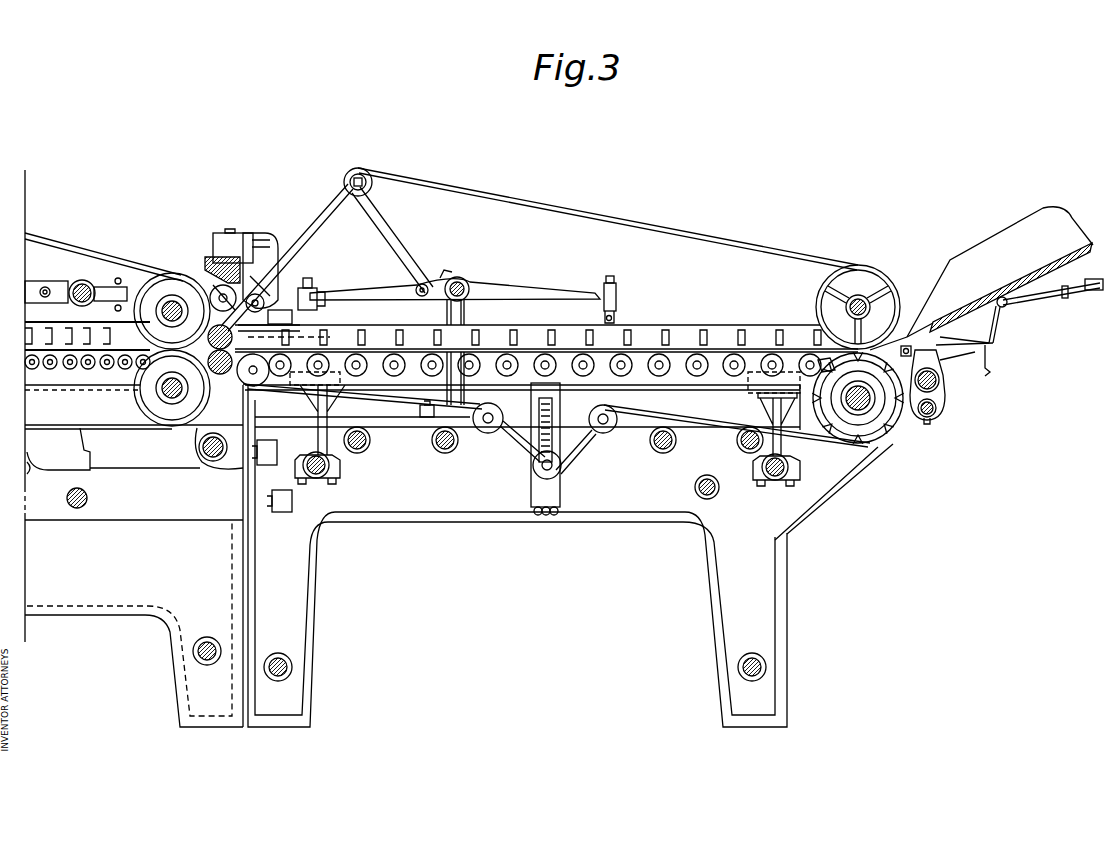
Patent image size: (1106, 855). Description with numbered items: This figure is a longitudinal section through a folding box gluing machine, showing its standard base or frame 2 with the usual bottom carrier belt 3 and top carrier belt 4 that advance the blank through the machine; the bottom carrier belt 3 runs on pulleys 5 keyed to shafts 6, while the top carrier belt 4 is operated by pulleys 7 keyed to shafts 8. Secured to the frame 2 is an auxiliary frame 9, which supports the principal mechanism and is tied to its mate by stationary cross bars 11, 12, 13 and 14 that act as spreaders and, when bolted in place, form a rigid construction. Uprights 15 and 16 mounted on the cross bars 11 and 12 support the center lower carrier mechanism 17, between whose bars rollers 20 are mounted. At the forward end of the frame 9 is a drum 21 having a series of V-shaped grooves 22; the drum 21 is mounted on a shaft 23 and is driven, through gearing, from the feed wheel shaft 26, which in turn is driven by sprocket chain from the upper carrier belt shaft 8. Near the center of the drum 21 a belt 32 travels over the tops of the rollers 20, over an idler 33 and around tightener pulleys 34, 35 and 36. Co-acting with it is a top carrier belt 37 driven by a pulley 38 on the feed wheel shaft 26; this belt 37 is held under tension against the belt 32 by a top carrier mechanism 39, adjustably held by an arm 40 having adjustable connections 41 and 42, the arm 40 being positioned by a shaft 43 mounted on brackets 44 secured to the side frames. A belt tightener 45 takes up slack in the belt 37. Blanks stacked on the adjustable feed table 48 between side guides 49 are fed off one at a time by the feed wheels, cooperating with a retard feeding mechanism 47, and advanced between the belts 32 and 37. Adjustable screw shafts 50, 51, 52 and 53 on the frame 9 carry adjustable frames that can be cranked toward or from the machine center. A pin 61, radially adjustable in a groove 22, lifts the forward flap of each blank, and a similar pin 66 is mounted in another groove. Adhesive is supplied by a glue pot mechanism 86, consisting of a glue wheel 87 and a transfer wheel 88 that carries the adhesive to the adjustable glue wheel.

The base or frame 2 is at (105, 592).
The bottom carrier belt 3 is at (121, 428).
The top carrier belt 4 is at (97, 254).
The pulleys 5 is at (157, 392).
The shafts 6 is at (167, 389).
The pulleys 7 is at (158, 288).
The shafts 8 is at (173, 300).
The auxiliary frame 9 is at (430, 498).
The cross bar 11 is at (318, 477).
The cross bar 12 is at (773, 480).
The cross bar 13 is at (291, 672).
The cross bar 14 is at (765, 664).
The upright 15 is at (328, 417).
The upright 16 is at (771, 405).
The center lower carrier mechanism 17 is at (533, 337).
The rollers 20 is at (407, 352).
The drum 21 is at (903, 425).
The V-shaped grooves 22 is at (832, 428).
The shaft 23 is at (870, 410).
The feed wheel shaft 26 is at (863, 297).
The belt 32 is at (753, 347).
The idler 33 is at (265, 380).
The tightener pulley 34 is at (487, 430).
The tightener pulley 35 is at (538, 470).
The tightener pulley 36 is at (608, 430).
The top carrier belt 37 is at (660, 222).
The pulley 38 is at (837, 273).
The top carrier mechanism 39 is at (647, 332).
The arm 40 is at (493, 287).
The adjustable connection 41 is at (312, 293).
The adjustable connection 42 is at (614, 288).
The shaft 43 is at (462, 278).
The brackets 44 is at (470, 313).
The belt tightener 45 is at (380, 212).
The retard feeding mechanism 47 is at (932, 366).
The adjustable feed table 48 is at (1062, 243).
The side guides 49 is at (997, 250).
The adjustable screw shaft 50 is at (359, 450).
The adjustable screw shaft 51 is at (432, 443).
The adjustable screw shaft 52 is at (663, 451).
The adjustable screw shaft 53 is at (740, 443).
The pin 61 is at (826, 358).
The pin 66 is at (887, 440).
The glue pot mechanism 86 is at (282, 317).
The glue wheel 87 is at (265, 237).
The transfer wheel 88 is at (201, 257).